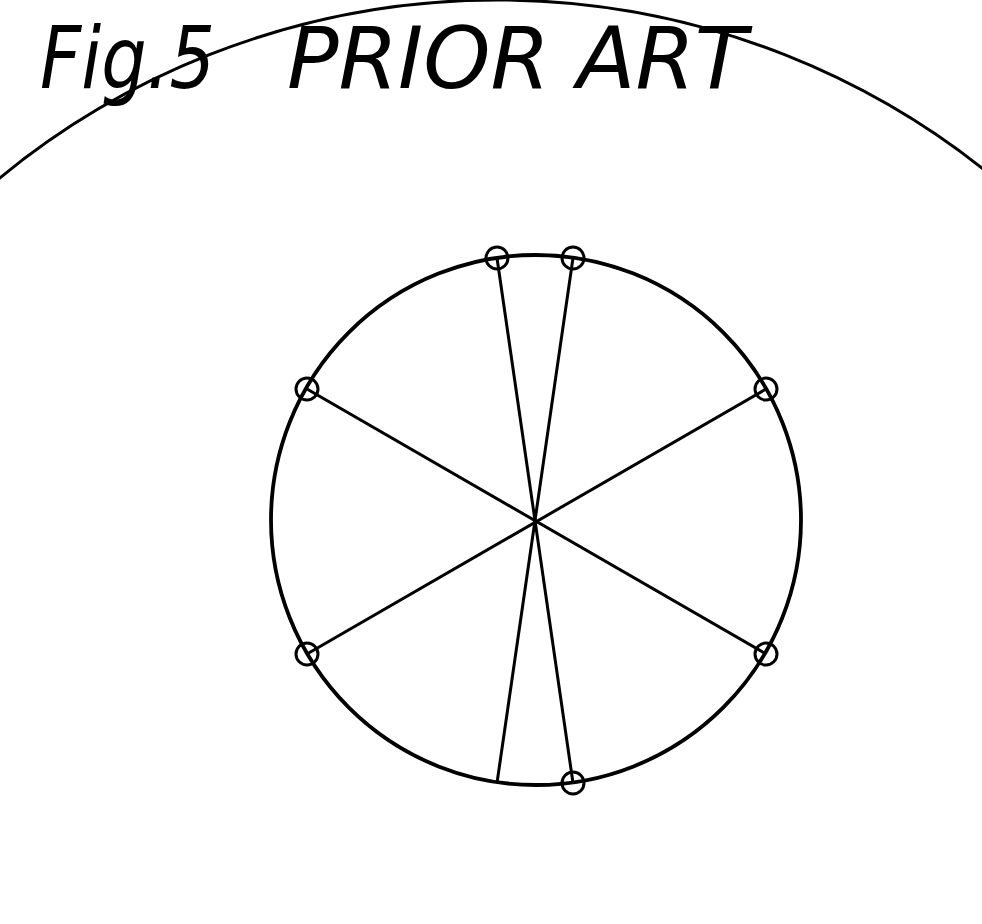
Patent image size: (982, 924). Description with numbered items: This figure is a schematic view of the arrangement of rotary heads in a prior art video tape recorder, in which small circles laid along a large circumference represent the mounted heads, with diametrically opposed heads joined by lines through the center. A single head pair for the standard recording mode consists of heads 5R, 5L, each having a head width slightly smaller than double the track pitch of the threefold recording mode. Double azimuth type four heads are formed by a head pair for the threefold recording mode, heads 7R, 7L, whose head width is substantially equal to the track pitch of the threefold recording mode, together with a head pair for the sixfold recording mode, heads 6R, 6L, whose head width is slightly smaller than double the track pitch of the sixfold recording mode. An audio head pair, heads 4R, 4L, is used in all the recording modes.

The audio head 4L is at (777, 389).
The audio head 4R is at (300, 665).
The head for standard recording mode 5L is at (777, 654).
The head for standard recording mode 5R is at (296, 389).
The head for sixfold recording mode 6L is at (573, 247).
The head for sixfold recording mode 6R is at (497, 794).
The head for threefold recording mode 7L is at (573, 794).
The head for threefold recording mode 7R is at (497, 247).